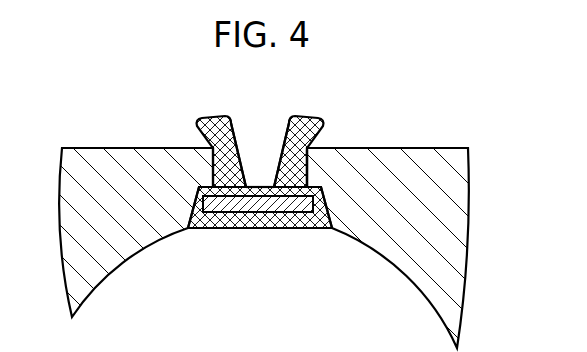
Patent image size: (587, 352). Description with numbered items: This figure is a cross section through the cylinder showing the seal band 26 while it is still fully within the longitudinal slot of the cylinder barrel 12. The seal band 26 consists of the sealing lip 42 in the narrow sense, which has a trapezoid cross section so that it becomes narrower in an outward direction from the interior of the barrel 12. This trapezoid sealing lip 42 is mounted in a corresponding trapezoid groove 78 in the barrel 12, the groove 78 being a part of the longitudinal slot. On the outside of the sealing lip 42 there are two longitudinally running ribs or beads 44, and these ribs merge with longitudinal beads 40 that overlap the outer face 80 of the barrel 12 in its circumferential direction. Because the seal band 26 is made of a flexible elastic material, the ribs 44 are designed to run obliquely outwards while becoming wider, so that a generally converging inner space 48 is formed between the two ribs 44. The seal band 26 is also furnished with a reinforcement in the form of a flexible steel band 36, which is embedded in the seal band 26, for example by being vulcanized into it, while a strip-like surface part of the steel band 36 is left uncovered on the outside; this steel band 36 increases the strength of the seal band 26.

The cylinder barrel 12 is at (448, 214).
The seal band 26 is at (260, 235).
The flexible steel band 36 is at (235, 208).
The longitudinal beads 40 is at (266, 132).
The sealing lip 42 is at (273, 219).
The ribs or beads 44 is at (240, 160).
The converging inner space 48 is at (252, 170).
The trapezoid groove 78 is at (331, 188).
The outer face 80 is at (125, 148).